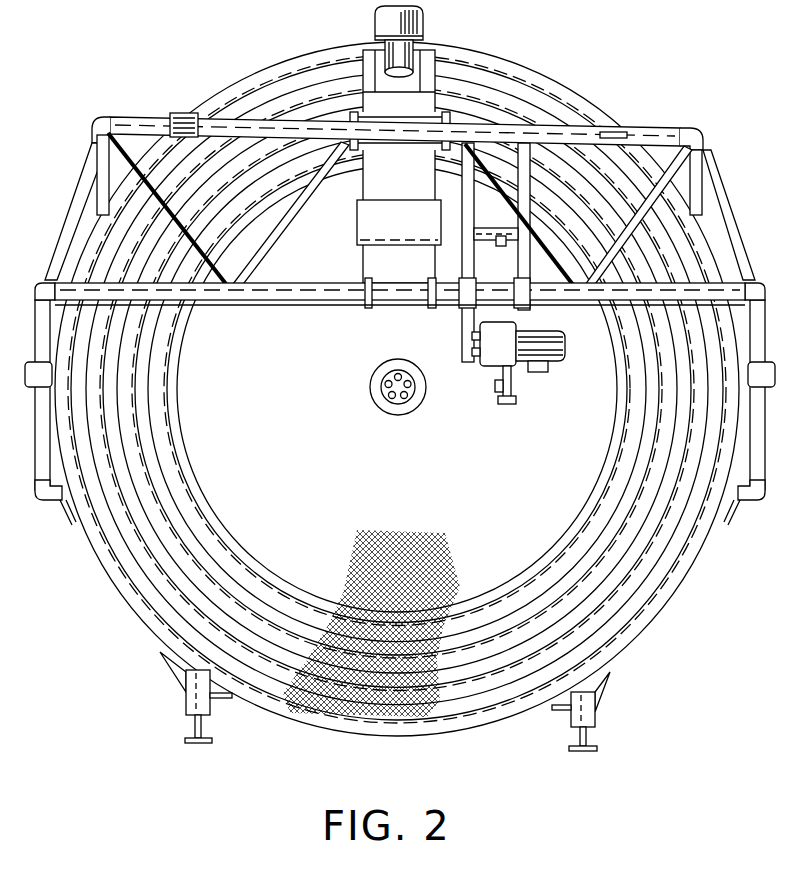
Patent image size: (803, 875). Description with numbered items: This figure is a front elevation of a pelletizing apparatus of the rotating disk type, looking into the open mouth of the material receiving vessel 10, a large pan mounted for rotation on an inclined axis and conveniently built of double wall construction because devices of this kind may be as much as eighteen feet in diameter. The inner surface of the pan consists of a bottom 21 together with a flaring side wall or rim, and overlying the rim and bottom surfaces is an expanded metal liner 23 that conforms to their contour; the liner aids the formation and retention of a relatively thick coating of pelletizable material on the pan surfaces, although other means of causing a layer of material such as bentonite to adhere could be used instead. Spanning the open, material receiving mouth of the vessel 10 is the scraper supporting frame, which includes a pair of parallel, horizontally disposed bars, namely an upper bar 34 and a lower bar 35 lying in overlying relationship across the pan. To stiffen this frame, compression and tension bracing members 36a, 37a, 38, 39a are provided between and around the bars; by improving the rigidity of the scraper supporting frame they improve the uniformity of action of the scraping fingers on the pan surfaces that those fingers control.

The material receiving vessel 10 is at (505, 726).
The bottom 21 is at (358, 406).
The expanded metal liner 23 is at (415, 560).
The upper bar 34 is at (656, 128).
The lower bar 35 is at (303, 301).
The bracing member 36a is at (268, 250).
The bracing member 37a is at (522, 268).
The bracing member 38 is at (606, 293).
The bracing member 39a is at (196, 288).